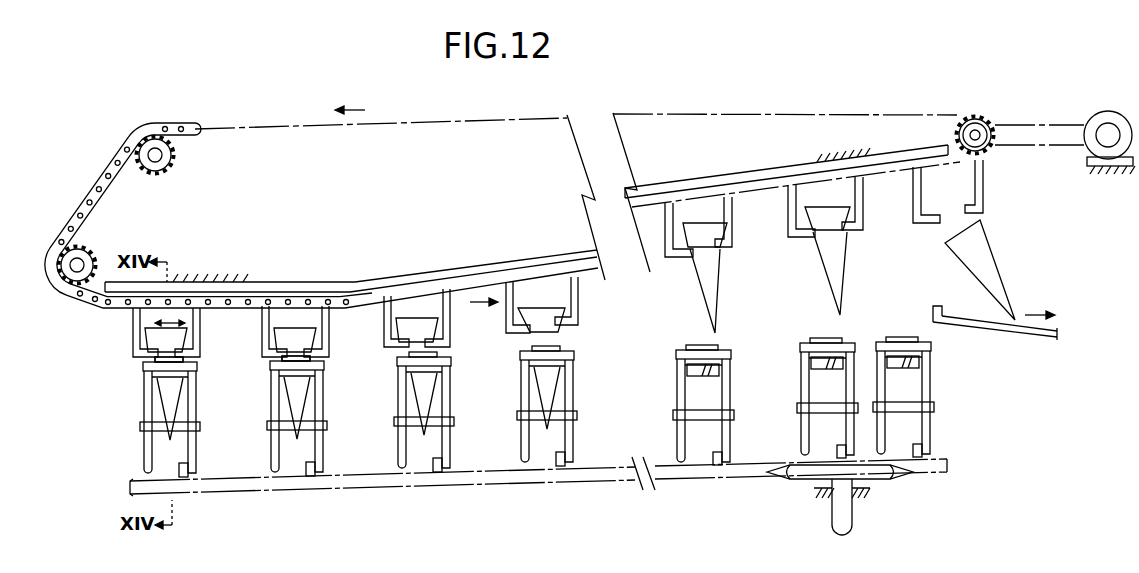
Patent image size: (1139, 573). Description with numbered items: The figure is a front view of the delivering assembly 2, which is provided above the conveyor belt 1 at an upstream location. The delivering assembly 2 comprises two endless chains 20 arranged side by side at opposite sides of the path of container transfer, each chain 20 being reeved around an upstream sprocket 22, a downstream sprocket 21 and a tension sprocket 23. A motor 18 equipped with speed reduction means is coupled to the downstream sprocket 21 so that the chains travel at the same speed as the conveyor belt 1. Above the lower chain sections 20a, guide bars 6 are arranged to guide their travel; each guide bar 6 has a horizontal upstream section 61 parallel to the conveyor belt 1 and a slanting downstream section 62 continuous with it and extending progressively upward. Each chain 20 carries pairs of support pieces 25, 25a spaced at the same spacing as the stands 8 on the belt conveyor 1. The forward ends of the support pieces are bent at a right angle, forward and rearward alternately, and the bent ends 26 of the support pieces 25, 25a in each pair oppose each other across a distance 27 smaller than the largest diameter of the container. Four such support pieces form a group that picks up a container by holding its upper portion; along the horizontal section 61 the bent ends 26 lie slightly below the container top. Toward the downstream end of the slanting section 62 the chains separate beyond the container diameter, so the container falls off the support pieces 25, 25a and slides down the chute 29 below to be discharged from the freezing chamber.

The conveyor belt 1 is at (134, 475).
The delivering assembly 2 is at (124, 321).
The guide bar 6 is at (387, 262).
The stand 8 is at (331, 438).
The motor 18 is at (1103, 112).
The endless chain 20 is at (103, 187).
The lower chain section 20a is at (259, 298).
The downstream sprocket 21 is at (976, 117).
The upstream sprocket 22 is at (63, 283).
The tension sprocket 23 is at (178, 160).
The support piece 25 is at (139, 328).
The support piece 25a is at (201, 323).
The bent end 26 is at (191, 351).
The distance 27 is at (174, 319).
The chute 29 is at (1020, 334).
The horizontal upstream section 61 is at (332, 289).
The slanting downstream section 62 is at (417, 282).